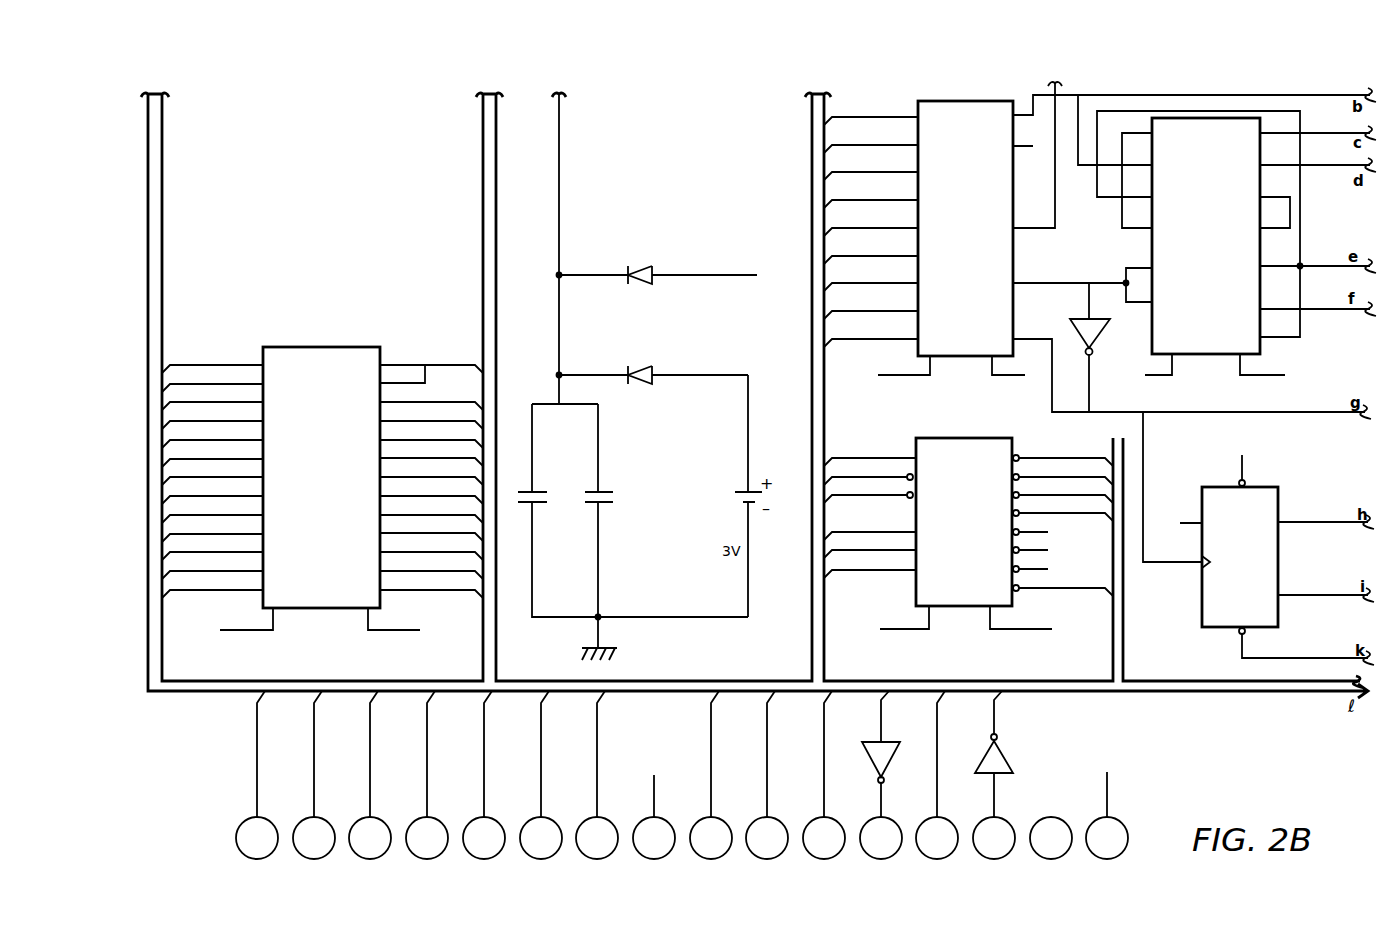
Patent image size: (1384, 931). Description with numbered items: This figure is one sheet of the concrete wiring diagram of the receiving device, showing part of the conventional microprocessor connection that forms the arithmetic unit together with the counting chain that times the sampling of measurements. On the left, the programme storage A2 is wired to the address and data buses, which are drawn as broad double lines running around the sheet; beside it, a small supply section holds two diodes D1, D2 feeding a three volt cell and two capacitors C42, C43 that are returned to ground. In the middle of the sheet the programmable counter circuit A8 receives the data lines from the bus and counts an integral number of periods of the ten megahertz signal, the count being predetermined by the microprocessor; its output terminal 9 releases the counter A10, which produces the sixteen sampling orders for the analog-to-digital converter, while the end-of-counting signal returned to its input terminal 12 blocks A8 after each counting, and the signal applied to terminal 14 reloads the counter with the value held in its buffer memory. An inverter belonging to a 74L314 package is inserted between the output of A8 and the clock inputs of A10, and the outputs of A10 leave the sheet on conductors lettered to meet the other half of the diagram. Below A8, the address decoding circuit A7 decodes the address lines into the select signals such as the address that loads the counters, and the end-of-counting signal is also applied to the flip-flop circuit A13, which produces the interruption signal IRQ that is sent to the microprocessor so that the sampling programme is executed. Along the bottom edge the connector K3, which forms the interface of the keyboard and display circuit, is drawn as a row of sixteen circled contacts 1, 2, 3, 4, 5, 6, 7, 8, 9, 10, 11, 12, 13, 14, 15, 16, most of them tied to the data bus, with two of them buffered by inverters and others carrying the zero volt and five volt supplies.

The programme storage A2 is at (322, 493).
The programmable counter circuit A8 is at (1097, 247).
The counter A10 is at (1224, 240).
The address decoding circuit A7 is at (968, 538).
The flip-flop circuit A13 is at (1255, 535).
The inverter 1/6 74L314 is at (1088, 328).
The diode D1 is at (675, 287).
The diode D2 is at (653, 388).
The capacitor C42 is at (633, 510).
The capacitor C43 is at (608, 510).
The connector K3 is at (680, 778).
The connector pin 1 (D7) 1 is at (255, 775).
The connector pin 2 (D6) 2 is at (311, 775).
The connector pin 3 (D5) 3 is at (368, 775).
The connector pin 4 (D4) 4 is at (424, 775).
The connector pin 5 (D3) 5 is at (481, 775).
The connector pin 6 (D2) 6 is at (537, 775).
The connector pin 7 (D1) 7 is at (594, 775).
The connector pin 8 (0V) 8 is at (654, 808).
The output terminal 9 is at (708, 775).
The connector pin 10 (580) 10 is at (760, 775).
The connector pin 11 (5800) 11 is at (812, 775).
The input terminal 12 is at (869, 775).
The connector pin 13 (7000) 13 is at (925, 775).
The terminal 14 is at (981, 775).
The connector pin 15 is at (1051, 838).
The connector pin 16 (+5V) 16 is at (1105, 806).